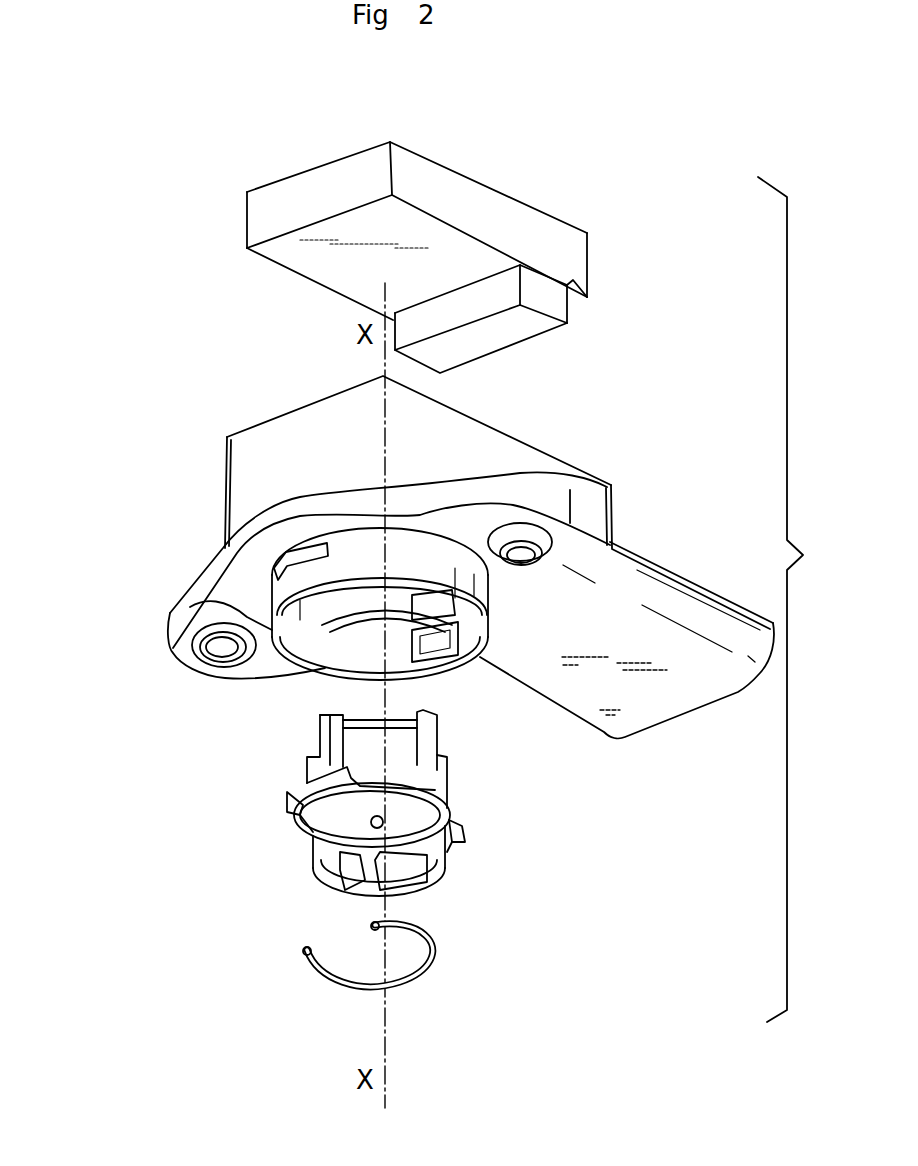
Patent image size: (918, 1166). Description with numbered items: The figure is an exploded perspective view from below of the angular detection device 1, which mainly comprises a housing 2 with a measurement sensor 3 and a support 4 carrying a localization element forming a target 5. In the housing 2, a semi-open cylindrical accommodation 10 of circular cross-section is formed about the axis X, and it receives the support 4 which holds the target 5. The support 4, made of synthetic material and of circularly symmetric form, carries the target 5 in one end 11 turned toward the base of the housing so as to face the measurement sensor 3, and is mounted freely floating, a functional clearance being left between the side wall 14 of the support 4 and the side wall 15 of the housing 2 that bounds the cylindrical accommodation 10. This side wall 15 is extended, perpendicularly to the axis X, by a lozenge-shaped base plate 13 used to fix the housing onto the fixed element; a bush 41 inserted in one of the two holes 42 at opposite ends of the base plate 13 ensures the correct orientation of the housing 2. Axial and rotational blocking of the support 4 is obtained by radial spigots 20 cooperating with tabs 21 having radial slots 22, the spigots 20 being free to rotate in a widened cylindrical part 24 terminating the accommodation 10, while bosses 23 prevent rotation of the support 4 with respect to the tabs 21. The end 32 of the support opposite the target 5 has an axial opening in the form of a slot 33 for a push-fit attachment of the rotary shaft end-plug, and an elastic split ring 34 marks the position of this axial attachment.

The angular detection device 1 is at (805, 599).
The housing 2 is at (640, 518).
The measurement sensor 3 is at (612, 258).
The support 4 is at (378, 855).
The target 5 is at (377, 722).
The cylindrical accommodation 10 is at (348, 652).
The end of the support 11 is at (318, 718).
The base plate 13 is at (208, 583).
The side wall of the support 14 is at (310, 858).
The side wall of the housing 15 is at (313, 580).
The radial spigots 20 is at (288, 797).
The tabs 21 is at (440, 658).
The radial slots 22 is at (470, 608).
The bosses 23 is at (305, 813).
The widened cylindrical part 24 is at (190, 612).
The end of the support 32 is at (325, 878).
The slot 33 is at (345, 885).
The elastic split ring 34 is at (430, 957).
The bush 41 is at (540, 528).
The holes 42 is at (207, 662).